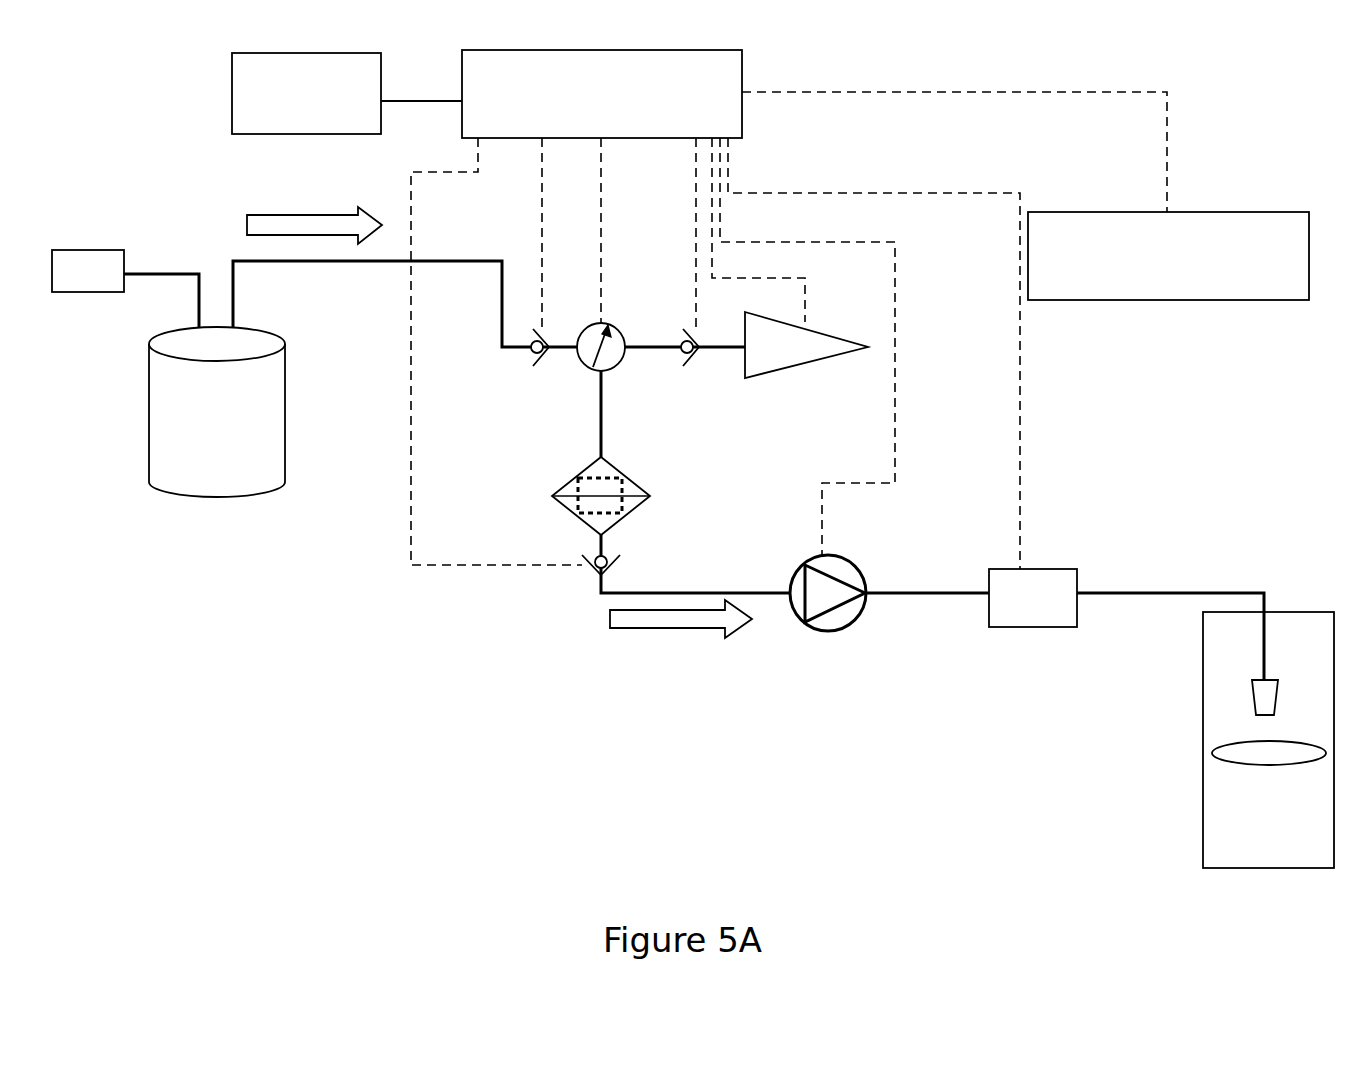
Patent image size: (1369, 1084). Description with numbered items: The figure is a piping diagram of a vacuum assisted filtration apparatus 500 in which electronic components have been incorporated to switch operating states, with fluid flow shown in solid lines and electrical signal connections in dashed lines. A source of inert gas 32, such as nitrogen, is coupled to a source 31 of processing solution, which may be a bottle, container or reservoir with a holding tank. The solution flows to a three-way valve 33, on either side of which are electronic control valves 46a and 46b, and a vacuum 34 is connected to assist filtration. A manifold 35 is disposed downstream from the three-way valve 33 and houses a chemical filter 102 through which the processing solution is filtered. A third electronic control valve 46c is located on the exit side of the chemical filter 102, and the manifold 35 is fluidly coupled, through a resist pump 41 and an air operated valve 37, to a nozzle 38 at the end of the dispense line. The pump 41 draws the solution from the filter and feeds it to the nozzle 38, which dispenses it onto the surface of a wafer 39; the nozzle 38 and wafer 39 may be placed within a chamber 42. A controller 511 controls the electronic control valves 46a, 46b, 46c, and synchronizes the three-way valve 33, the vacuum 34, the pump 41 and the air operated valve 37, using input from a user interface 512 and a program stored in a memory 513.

The vacuum assisted filtration apparatus 500 is at (1248, 66).
The controller 511 is at (774, 309).
The user interface 512 is at (1250, 308).
The memory 513 is at (306, 93).
The source of processing solution 31 is at (199, 501).
The source of inert gas 32 is at (90, 250).
The three-way valve 33 is at (625, 357).
The vacuum 34 is at (800, 365).
The manifold 35 is at (565, 487).
The chemical filter 102 is at (627, 487).
The air operated valve 37 is at (1000, 568).
The nozzle 38 is at (1250, 705).
The wafer 39 is at (1265, 770).
The resist pump 41 is at (840, 557).
The chamber 42 is at (1203, 798).
The electronic control valve 46a is at (533, 355).
The electronic control valve 46b is at (678, 333).
The electronic control valve 46c is at (578, 547).